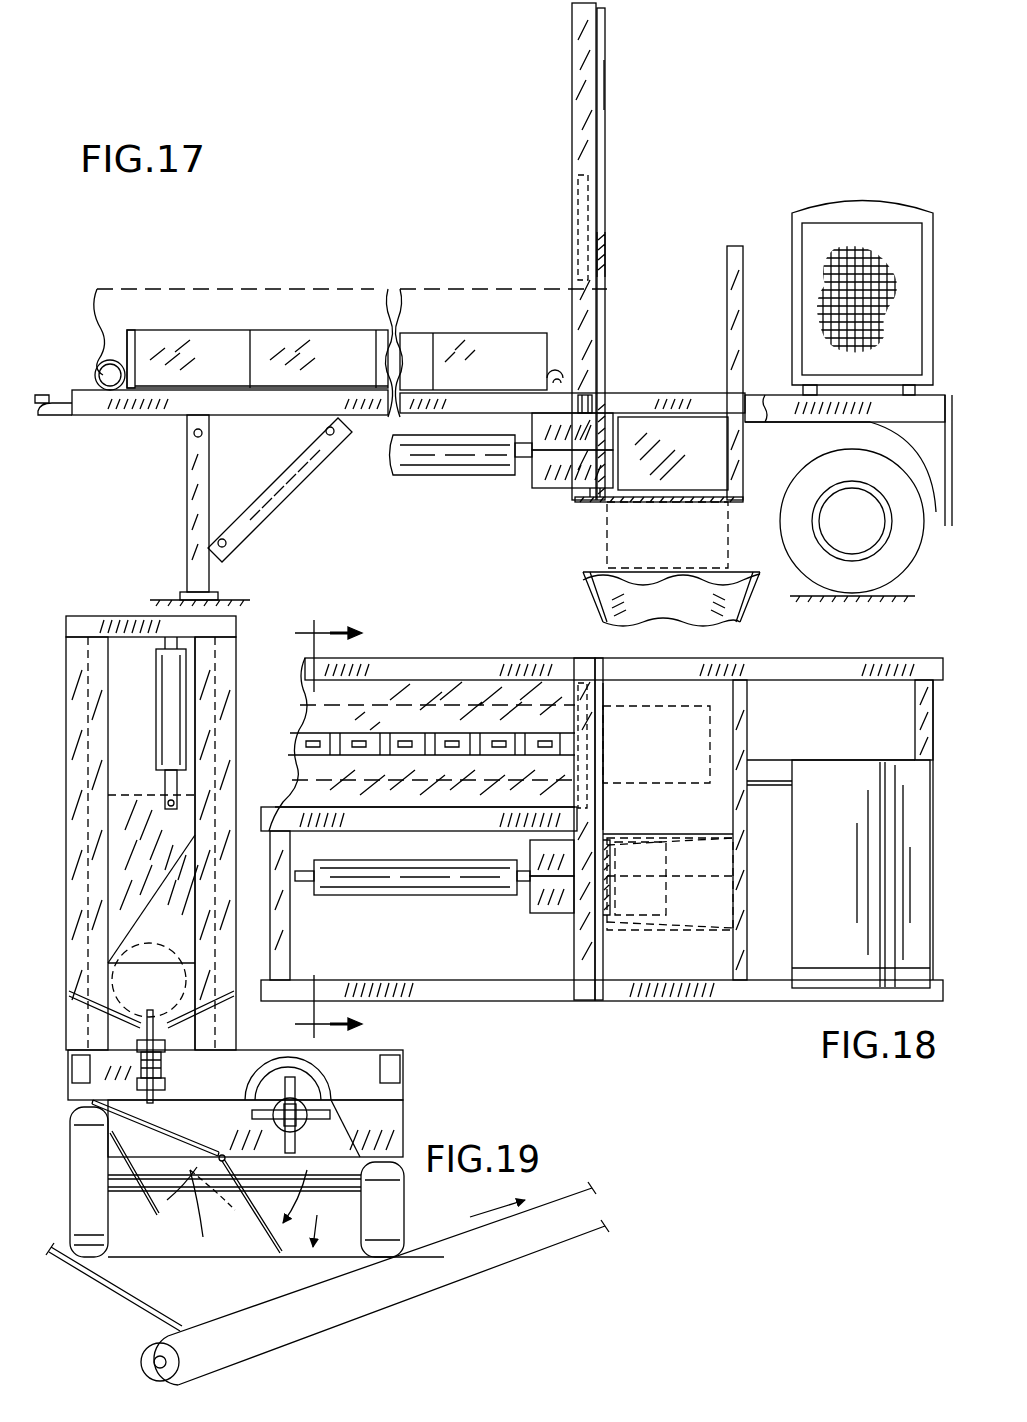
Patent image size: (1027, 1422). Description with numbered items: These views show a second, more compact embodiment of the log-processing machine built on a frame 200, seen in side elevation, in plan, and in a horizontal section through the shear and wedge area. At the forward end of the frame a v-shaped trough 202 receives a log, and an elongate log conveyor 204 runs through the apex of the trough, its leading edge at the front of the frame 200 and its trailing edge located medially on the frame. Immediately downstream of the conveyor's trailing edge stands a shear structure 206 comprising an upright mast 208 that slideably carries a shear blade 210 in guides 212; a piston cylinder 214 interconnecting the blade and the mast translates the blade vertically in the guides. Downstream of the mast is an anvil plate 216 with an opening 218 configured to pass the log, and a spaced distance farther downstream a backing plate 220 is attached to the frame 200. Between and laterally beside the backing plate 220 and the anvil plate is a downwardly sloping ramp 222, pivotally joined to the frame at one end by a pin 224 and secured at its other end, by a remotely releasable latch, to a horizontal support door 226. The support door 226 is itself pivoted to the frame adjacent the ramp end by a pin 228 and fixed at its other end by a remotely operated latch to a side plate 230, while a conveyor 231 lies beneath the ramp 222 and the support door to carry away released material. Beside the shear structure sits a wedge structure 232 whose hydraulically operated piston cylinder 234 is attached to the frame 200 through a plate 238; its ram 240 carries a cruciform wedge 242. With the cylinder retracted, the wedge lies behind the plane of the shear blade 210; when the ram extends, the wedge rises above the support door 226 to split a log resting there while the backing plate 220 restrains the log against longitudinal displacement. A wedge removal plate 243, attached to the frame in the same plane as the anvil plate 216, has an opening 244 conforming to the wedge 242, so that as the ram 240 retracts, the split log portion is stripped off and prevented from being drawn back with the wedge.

In FIG. 17, the frame 200 is at (124, 428).
In FIG. 18, the frame 200 is at (566, 1004).
In FIG. 19, the frame 200 is at (382, 1040).
In FIG. 17, the v-shaped trough 202 is at (189, 359).
In FIG. 18, the v-shaped trough 202 is at (483, 700).
In FIG. 19, the v-shaped trough 202 is at (101, 1011).
In FIG. 17, the log conveyor 204 is at (96, 372).
In FIG. 18, the log conveyor 204 is at (361, 742).
In FIG. 19, the log conveyor 204 is at (149, 980).
In FIG. 17, the shear structure 206 is at (628, 88).
In FIG. 18, the shear structure 206 is at (615, 748).
In FIG. 19, the shear structure 206 is at (242, 631).
In FIG. 17, the upright mast 208 is at (598, 40).
In FIG. 18, the upright mast 208 is at (604, 820).
In FIG. 19, the upright mast 208 is at (230, 744).
In FIG. 17, the shear blade 210 is at (576, 212).
In FIG. 18, the shear blade 210 is at (605, 778).
In FIG. 19, the shear blade 210 is at (128, 836).
In FIG. 19, the guides 212 is at (98, 655).
In FIG. 19, the piston cylinder 214 is at (166, 688).
In FIG. 17, the anvil plate 216 is at (605, 168).
In FIG. 18, the anvil plate 216 is at (604, 700).
In FIG. 19, the anvil plate 216 is at (178, 887).
In FIG. 17, the opening 218 is at (606, 268).
In FIG. 19, the opening 218 is at (178, 935).
In FIG. 17, the backing plate 220 is at (738, 246).
In FIG. 18, the backing plate 220 is at (744, 712).
In FIG. 17, the ramp 222 is at (705, 447).
In FIG. 18, the ramp 222 is at (723, 755).
In FIG. 19, the ramp 222 is at (110, 1167).
In FIG. 19, the pin 224 is at (95, 1100).
In FIG. 17, the support door 226 is at (685, 500).
In FIG. 19, the support door 226 is at (293, 1233).
In FIG. 19, the pin 228 is at (222, 1161).
In FIG. 19, the side plate 230 is at (395, 1136).
In FIG. 17, the conveyor 231 is at (698, 611).
In FIG. 19, the conveyor 231 is at (548, 1195).
In FIG. 17, the wedge structure 232 is at (492, 424).
In FIG. 18, the wedge structure 232 is at (480, 857).
In FIG. 17, the piston cylinder 234 is at (430, 462).
In FIG. 18, the piston cylinder 234 is at (390, 880).
In FIG. 19, the piston cylinder 234 is at (283, 1122).
In FIG. 18, the plate 238 is at (280, 950).
In FIG. 17, the ram 240 is at (525, 460).
In FIG. 18, the ram 240 is at (521, 895).
In FIG. 17, the cruciform wedge 242 is at (553, 488).
In FIG. 18, the cruciform wedge 242 is at (556, 913).
In FIG. 19, the cruciform wedge 242 is at (262, 1083).
In FIG. 17, the wedge removal plate 243 is at (604, 498).
In FIG. 18, the wedge removal plate 243 is at (603, 946).
In FIG. 19, the wedge removal plate 243 is at (372, 1135).
In FIG. 17, the opening 244 is at (602, 408).
In FIG. 19, the opening 244 is at (305, 1088).